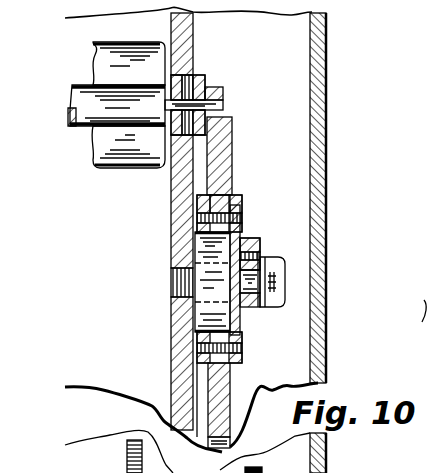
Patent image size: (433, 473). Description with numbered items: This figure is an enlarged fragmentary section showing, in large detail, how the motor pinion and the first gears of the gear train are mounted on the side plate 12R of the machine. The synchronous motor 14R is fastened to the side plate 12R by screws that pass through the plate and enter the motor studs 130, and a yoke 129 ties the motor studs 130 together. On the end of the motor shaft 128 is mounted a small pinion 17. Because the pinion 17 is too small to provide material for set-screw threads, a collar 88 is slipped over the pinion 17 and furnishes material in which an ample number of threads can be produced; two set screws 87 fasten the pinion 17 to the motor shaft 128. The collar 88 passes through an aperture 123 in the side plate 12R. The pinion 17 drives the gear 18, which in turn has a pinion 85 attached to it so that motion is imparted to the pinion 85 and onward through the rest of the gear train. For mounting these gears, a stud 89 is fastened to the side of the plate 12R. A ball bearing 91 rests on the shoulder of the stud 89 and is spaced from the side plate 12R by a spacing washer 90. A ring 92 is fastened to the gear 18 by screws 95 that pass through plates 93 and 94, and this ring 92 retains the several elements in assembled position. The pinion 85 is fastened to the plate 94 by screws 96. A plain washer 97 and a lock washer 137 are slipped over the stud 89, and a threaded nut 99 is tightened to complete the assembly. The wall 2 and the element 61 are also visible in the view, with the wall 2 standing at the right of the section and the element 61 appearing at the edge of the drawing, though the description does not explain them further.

The housing wall 2 is at (326, 198).
The side plate 12R is at (170, 231).
The synchronous motor 14R is at (138, 168).
The pinion 17 is at (218, 88).
The gear 18 is at (232, 148).
The lever 61 is at (425, 322).
The pinion 85 is at (255, 246).
The set screws 87 is at (195, 74).
The collar 88 is at (202, 80).
The stud 89 is at (170, 289).
The spacing washer 90 is at (193, 314).
The ball bearing 91 is at (207, 279).
The ring 92 is at (197, 374).
The plate 93 is at (230, 366).
The plate 94 is at (241, 364).
The screws 95 is at (241, 348).
The screws 96 is at (260, 263).
The plain washer 97 is at (263, 308).
The threaded nut 99 is at (287, 303).
The aperture 123 is at (198, 137).
The motor shaft 128 is at (222, 105).
The yoke 129 is at (152, 170).
The motor studs 130 is at (78, 84).
The lock washer 137 is at (270, 257).